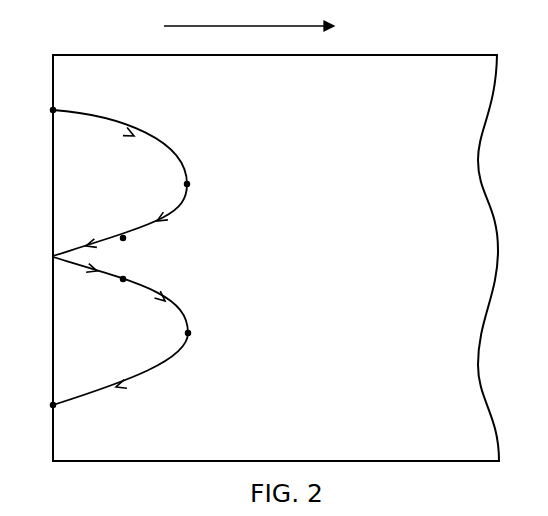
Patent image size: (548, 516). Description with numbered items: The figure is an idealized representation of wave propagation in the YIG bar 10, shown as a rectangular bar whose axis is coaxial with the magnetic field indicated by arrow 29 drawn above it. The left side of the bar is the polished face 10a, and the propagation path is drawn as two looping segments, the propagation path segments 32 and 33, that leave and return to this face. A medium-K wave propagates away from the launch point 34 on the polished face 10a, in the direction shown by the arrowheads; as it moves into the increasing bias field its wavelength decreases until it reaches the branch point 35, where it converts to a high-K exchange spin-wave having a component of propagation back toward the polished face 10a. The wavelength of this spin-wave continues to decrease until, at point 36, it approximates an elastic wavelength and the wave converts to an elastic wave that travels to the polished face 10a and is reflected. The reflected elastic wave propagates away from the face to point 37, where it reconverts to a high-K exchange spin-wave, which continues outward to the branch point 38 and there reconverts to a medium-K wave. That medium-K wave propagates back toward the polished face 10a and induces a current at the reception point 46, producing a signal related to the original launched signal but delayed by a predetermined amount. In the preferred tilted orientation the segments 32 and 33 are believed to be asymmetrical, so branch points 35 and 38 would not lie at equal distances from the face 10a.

The YIG bar 10 is at (103, 55).
The polished face 10a is at (53, 240).
The magnetic field arrow 29 is at (249, 16).
The propagation path segment 32 is at (120, 196).
The propagation path segment 33 is at (118, 345).
The launch point 34 is at (52, 109).
The branch point 35 is at (187, 184).
The conversion point 36 is at (123, 238).
The reconversion point 37 is at (123, 280).
The branch point 38 is at (188, 333).
The reception point 46 is at (53, 405).